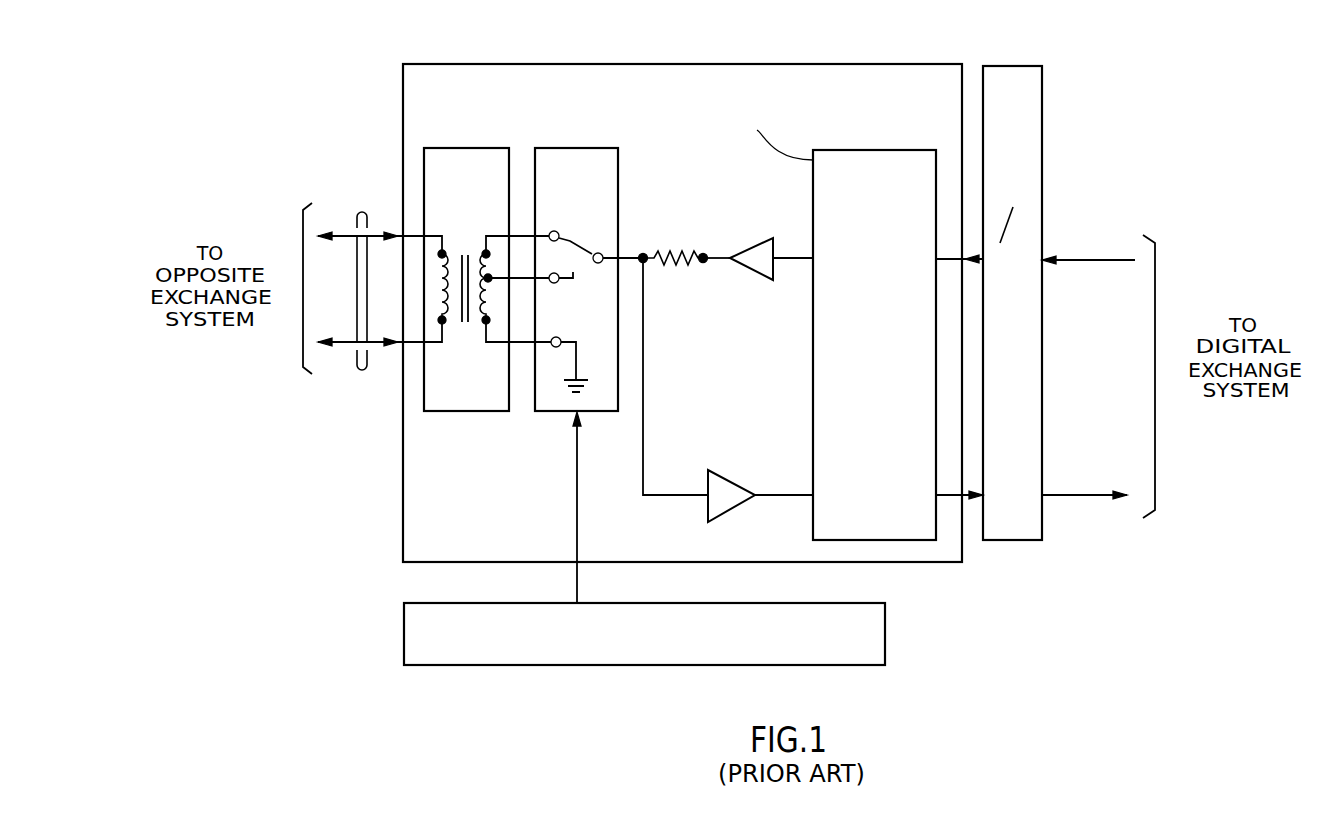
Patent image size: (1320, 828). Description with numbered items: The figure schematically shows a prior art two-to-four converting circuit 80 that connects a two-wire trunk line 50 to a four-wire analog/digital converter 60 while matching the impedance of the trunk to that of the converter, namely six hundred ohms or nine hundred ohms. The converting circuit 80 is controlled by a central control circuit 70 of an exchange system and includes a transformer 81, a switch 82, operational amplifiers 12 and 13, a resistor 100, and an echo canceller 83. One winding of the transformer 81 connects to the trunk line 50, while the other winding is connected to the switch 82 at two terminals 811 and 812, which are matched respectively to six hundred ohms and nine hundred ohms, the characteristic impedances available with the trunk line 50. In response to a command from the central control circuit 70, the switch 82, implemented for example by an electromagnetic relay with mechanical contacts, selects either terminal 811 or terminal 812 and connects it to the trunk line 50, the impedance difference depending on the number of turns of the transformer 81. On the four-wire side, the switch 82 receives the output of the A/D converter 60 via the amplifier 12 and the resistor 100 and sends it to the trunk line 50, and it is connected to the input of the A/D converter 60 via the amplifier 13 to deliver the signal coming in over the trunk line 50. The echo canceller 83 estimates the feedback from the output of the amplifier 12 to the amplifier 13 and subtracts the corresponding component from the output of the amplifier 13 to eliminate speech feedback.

The two-wire trunk line 50 is at (362, 370).
The four-wire analog/digital (A/D) converter 60 is at (1018, 66).
The central control circuit 70 is at (404, 632).
The 2 to 4 converting circuit 80 is at (532, 64).
The transformer 81 is at (460, 412).
The switch 82 is at (580, 313).
The echo canceller 83 is at (873, 150).
The terminal 811 is at (523, 278).
The terminal 812 is at (520, 236).
The resistor 100 is at (680, 252).
The operational amplifier 12 is at (760, 280).
The operational amplifier 13 is at (727, 472).